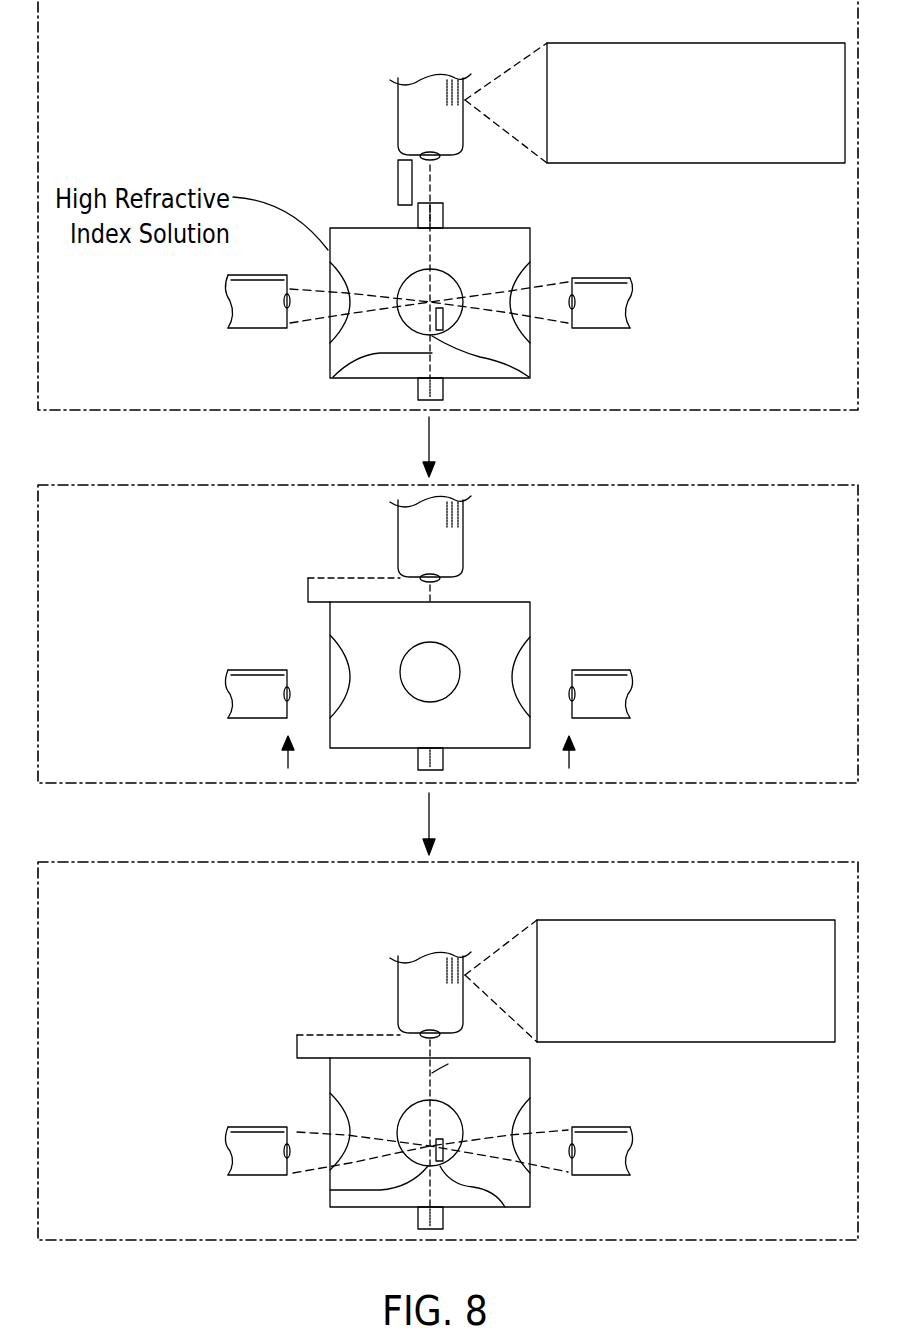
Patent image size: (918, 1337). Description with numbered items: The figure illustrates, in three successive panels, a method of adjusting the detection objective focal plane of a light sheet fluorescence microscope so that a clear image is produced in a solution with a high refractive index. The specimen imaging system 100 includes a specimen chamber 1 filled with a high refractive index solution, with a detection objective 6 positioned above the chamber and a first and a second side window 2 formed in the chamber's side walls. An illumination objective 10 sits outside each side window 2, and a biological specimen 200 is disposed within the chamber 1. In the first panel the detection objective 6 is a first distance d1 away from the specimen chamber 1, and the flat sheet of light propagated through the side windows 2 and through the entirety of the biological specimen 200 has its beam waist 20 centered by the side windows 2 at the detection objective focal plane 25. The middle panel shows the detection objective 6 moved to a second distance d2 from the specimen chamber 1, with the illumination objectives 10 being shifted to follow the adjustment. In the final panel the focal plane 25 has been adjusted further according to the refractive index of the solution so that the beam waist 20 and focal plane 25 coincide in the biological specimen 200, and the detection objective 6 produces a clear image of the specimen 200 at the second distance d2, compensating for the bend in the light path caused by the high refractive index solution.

The specimen imaging system 100 is at (280, 86).
The detection objective 6 is at (398, 122).
The specimen chamber 1 is at (332, 234).
The side windows 2 is at (328, 293).
The illumination objective 10 is at (226, 305).
The biological specimen 200 is at (455, 284).
The detection objective focal plane 25 is at (331, 376).
The beam waist 20 is at (300, 1200).
The first distance d1 is at (398, 182).
The second distance d2 is at (308, 590).